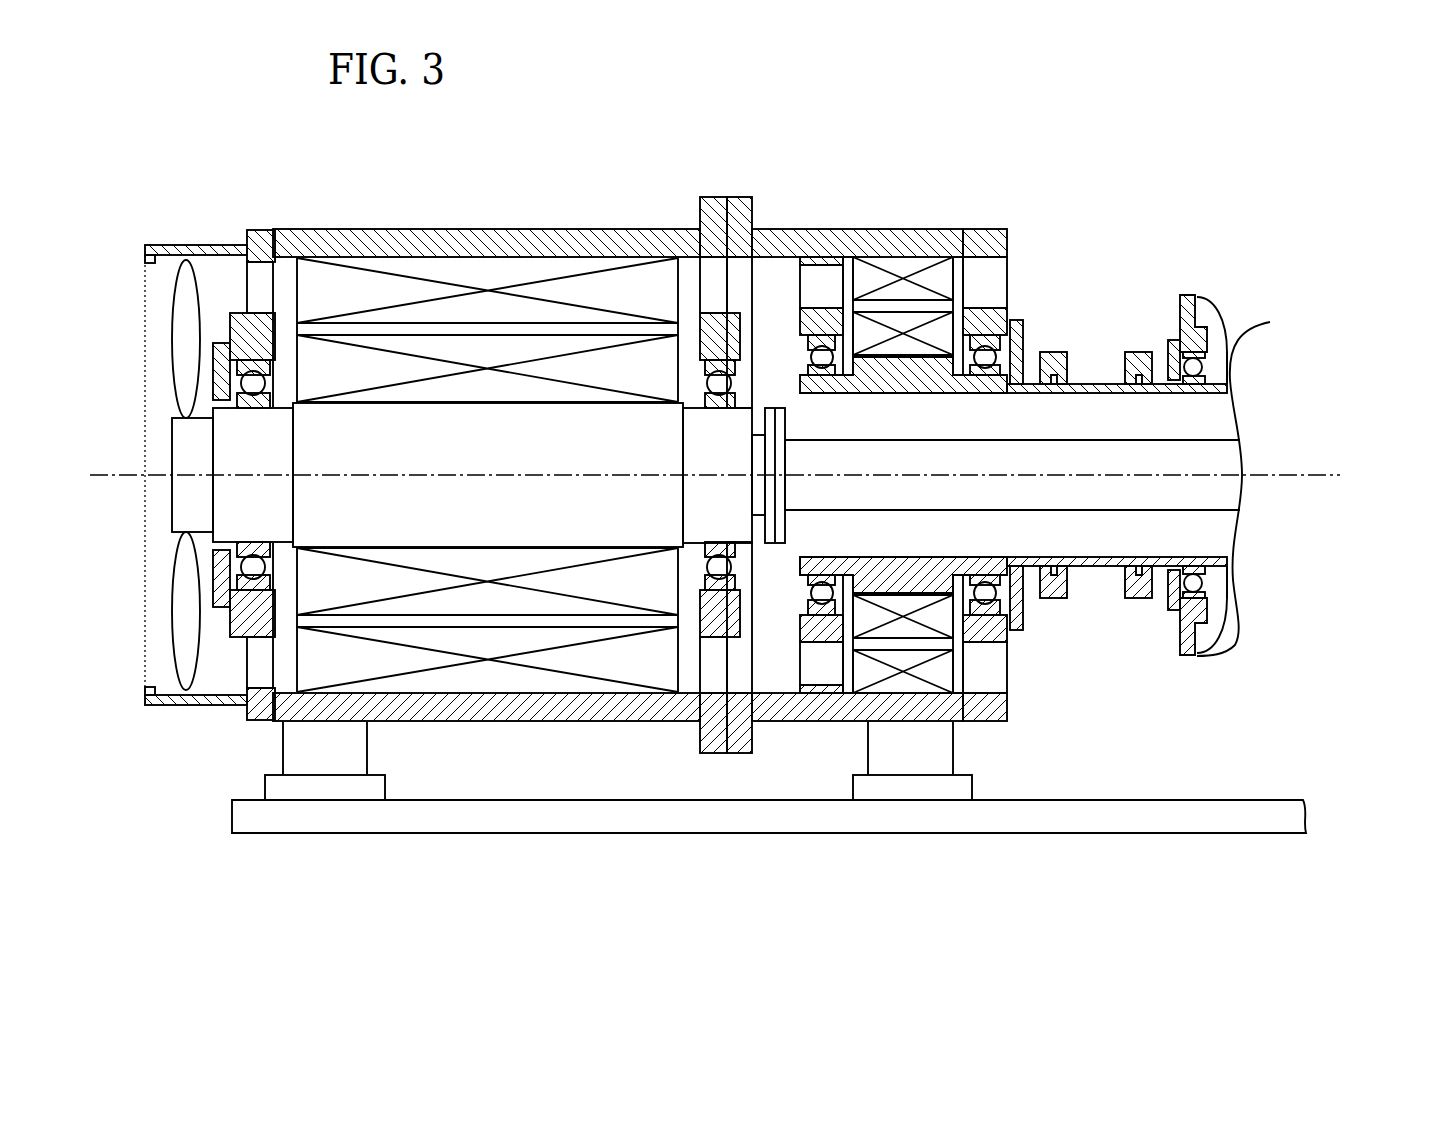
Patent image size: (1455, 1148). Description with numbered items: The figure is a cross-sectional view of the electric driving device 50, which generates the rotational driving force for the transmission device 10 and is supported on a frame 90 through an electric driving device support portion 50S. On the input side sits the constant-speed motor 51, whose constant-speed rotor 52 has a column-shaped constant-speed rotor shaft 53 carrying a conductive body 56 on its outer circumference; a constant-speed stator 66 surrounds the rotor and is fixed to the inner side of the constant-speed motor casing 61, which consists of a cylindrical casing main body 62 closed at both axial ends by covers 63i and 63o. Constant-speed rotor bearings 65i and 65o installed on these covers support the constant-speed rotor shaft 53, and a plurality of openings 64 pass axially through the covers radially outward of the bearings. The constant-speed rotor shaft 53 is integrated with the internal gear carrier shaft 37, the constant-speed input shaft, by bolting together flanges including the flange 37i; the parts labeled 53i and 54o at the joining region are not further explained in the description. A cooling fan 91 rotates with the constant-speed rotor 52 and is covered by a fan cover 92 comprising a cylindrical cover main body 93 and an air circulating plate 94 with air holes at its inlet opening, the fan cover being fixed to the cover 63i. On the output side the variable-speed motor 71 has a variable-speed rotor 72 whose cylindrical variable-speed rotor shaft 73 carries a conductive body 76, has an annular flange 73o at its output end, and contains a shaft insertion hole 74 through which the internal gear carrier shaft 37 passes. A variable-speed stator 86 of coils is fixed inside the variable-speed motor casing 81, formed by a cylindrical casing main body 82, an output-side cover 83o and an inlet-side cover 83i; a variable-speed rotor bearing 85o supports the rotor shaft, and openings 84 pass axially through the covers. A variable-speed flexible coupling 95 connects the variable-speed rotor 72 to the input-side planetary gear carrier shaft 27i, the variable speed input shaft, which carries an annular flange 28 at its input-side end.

The transmission device 10 is at (1262, 605).
The input-side planetary gear carrier shaft 27i is at (1227, 352).
The annular flange 28 is at (1147, 350).
The internal gear carrier shaft 37 is at (1215, 500).
The flange 37i is at (780, 405).
The electric driving device 50 is at (261, 215).
The electric driving device support portion 50S is at (312, 765).
The constant-speed motor 51 is at (277, 185).
The constant-speed rotor 52 is at (430, 628).
The constant-speed rotor shaft 53 is at (583, 522).
The coupling flange 53i is at (772, 405).
The output side end plate 54o is at (740, 245).
The conductive body 56 is at (500, 600).
The constant-speed motor casing 61 is at (518, 218).
The casing main body 62 is at (563, 245).
The cover 63i is at (262, 273).
The cover 63o is at (713, 205).
The openings 64 is at (185, 272).
The constant-speed rotor bearing 65i is at (262, 383).
The constant-speed rotor bearing 65o is at (708, 383).
The constant-speed stator 66 is at (458, 272).
The variable-speed motor 71 is at (994, 218).
The variable-speed rotor 72 is at (822, 895).
The variable-speed rotor shaft 73 is at (870, 585).
The annular flange 73o is at (1043, 352).
The shaft insertion hole 74 is at (833, 557).
The conductive body 76 is at (912, 625).
The variable-speed motor casing 81 is at (893, 218).
The casing main body 82 is at (917, 240).
The inlet-side cover 83i is at (838, 262).
The output-side cover 83o is at (1004, 270).
The openings 84 is at (808, 270).
The variable-speed rotor bearing 85o is at (1020, 322).
The variable-speed stator 86 is at (940, 278).
The frame 90 is at (1072, 820).
The cooling fan 91 is at (178, 242).
The fan cover 92 is at (100, 790).
The cover main body 93 is at (172, 707).
The air circulating plate 94 is at (145, 640).
The variable-speed flexible coupling 95 is at (1102, 385).